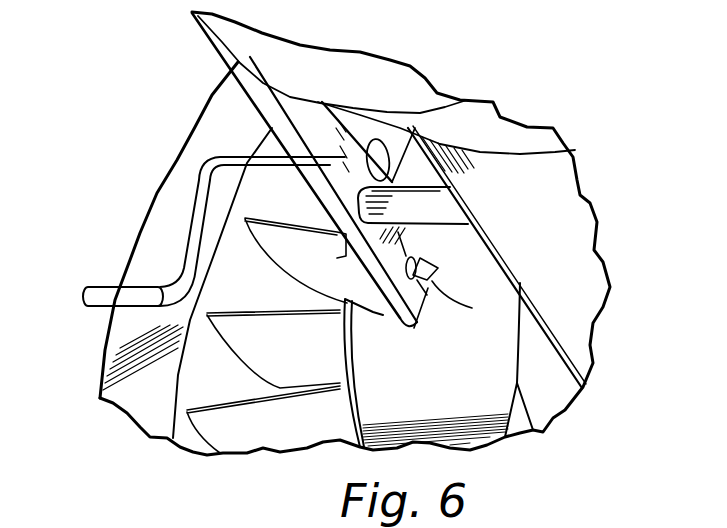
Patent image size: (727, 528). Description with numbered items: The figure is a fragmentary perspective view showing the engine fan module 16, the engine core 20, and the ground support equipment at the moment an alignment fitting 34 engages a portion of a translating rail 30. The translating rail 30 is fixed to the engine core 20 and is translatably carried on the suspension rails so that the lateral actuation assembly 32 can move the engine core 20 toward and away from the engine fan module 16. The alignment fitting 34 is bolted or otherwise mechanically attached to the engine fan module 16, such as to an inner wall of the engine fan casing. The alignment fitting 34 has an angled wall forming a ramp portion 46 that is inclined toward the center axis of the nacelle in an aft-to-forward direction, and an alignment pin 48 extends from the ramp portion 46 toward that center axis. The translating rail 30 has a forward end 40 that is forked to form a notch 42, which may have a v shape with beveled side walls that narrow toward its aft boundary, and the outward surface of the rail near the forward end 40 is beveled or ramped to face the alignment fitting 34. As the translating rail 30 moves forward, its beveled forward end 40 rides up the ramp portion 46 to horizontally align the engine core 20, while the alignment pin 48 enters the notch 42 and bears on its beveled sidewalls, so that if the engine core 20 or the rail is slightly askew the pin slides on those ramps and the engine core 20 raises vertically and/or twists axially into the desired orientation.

The engine fan module 16 is at (137, 332).
The engine core 20 is at (548, 204).
The translating rail 30 is at (308, 113).
The lateral actuation assembly 32 is at (195, 218).
The alignment fitting 34 is at (376, 312).
The forward end 40 is at (438, 268).
The notch 42 is at (452, 303).
The ramp portion 46 is at (420, 327).
The alignment pin 48 is at (432, 262).